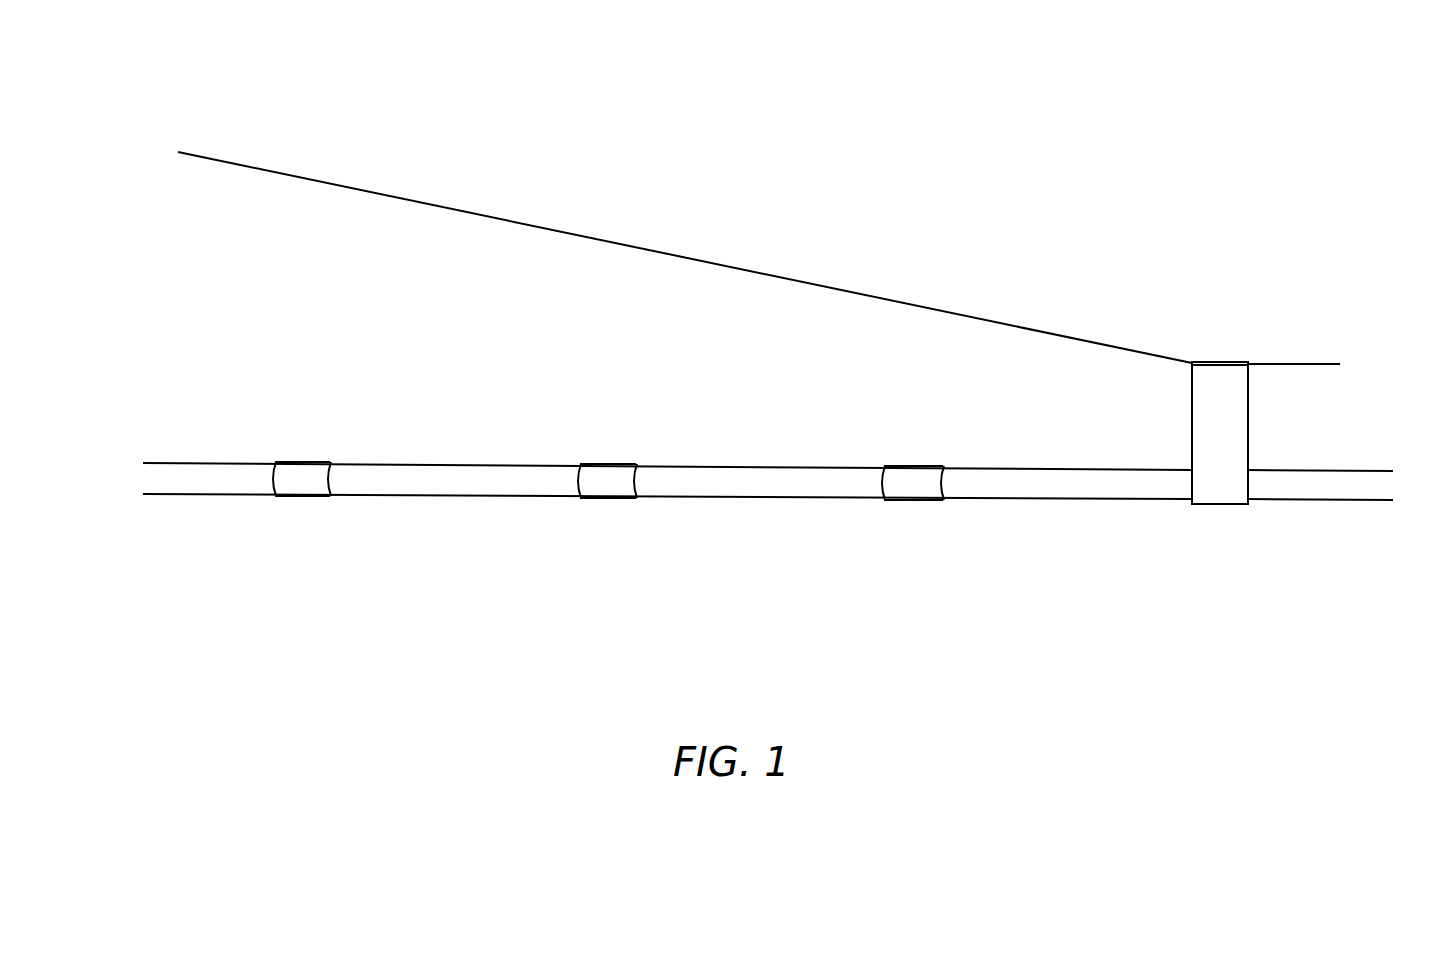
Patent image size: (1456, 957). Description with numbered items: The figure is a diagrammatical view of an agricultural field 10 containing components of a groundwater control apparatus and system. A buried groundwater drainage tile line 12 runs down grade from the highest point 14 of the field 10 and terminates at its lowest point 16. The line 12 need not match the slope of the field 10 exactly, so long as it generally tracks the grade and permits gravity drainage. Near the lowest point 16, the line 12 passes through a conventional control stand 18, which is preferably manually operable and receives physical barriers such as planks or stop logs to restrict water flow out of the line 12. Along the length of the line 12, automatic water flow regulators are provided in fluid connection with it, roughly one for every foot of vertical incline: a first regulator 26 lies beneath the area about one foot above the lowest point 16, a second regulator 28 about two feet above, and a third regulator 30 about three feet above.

The agricultural field 10 is at (254, 158).
The groundwater drainage tile line 12 is at (142, 482).
The highest point 14 is at (170, 152).
The lowest point 16 is at (1353, 364).
The control stand 18 is at (1213, 361).
The first regulator 26 is at (910, 512).
The second regulator 28 is at (604, 510).
The third regulator 30 is at (298, 512).